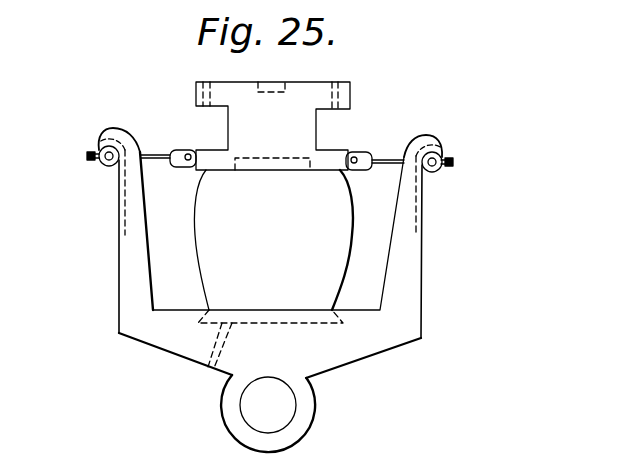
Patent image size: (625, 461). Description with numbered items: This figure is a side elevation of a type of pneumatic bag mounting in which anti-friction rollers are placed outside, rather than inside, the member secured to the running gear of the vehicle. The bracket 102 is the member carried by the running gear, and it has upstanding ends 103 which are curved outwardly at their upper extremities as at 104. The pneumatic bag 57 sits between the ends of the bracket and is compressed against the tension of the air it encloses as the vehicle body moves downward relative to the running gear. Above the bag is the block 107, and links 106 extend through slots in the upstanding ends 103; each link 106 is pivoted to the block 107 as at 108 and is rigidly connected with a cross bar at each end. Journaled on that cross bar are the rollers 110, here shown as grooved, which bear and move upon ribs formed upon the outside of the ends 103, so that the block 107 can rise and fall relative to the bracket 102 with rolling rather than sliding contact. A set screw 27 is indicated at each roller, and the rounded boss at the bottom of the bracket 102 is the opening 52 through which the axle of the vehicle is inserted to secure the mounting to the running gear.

The set screw 27 is at (86, 155).
The opening 52 is at (268, 413).
The pneumatic bag 57 is at (273, 269).
The bracket 102 is at (374, 347).
The upstanding ends 103 is at (127, 272).
The outwardly curved upper extremities 104 is at (112, 133).
The links 106 is at (152, 155).
The block 107 is at (273, 126).
The pivot 108 is at (184, 164).
The rollers 110 is at (107, 167).